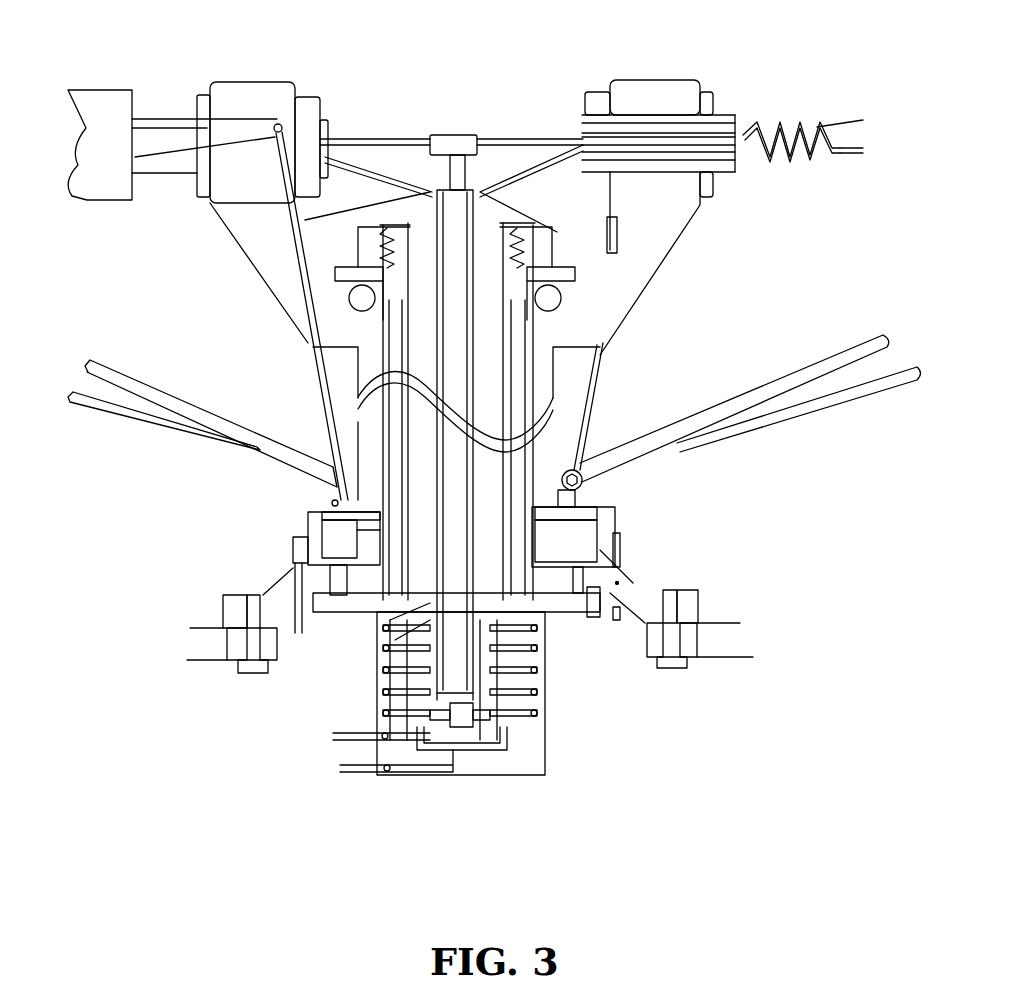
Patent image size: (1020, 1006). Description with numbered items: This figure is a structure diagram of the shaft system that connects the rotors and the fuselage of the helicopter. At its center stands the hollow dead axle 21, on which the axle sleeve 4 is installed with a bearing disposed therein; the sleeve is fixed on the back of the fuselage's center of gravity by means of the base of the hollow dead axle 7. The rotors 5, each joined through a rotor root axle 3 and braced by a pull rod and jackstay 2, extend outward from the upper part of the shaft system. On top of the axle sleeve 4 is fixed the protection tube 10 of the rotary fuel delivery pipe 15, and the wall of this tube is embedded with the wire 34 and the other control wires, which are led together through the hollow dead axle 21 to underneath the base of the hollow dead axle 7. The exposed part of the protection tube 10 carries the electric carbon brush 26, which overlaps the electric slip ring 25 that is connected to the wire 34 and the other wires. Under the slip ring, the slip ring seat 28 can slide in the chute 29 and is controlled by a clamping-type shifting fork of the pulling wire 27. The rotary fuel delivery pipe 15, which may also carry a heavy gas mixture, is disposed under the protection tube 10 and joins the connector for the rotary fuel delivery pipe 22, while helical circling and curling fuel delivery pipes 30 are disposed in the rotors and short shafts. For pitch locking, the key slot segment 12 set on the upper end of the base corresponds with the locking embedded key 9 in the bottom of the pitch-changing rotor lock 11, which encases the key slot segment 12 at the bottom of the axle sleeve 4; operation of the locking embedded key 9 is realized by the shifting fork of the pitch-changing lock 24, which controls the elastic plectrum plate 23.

The pull rod and jackstay 2 is at (207, 442).
The rotor root axle 3 is at (143, 163).
The axle sleeve 4 is at (543, 378).
The rotor 5 is at (88, 183).
The base of the hollow dead axle 7 is at (633, 583).
The locking embedded key 9 is at (557, 517).
The protection tube 10 is at (383, 683).
The pitch-changing rotor lock 11 is at (337, 508).
The key slot segment 12 is at (360, 557).
The rotary fuel delivery pipe 15 is at (507, 173).
The hollow dead axle 21 is at (393, 427).
The connector for the rotary fuel delivery pipe 22 is at (470, 725).
The elastic plectrum plate 23 is at (360, 522).
The shifting fork of the pitch-changing lock 24 is at (583, 500).
The electric slip ring 25 is at (274, 670).
The electric carbon brush 26 is at (425, 605).
The shifting fork of the pulling wire 27 is at (265, 770).
The slip ring seat 28 is at (483, 672).
The chute 29 is at (427, 695).
The curling fuel delivery pipe 30 is at (790, 157).
The wire 34 is at (390, 333).